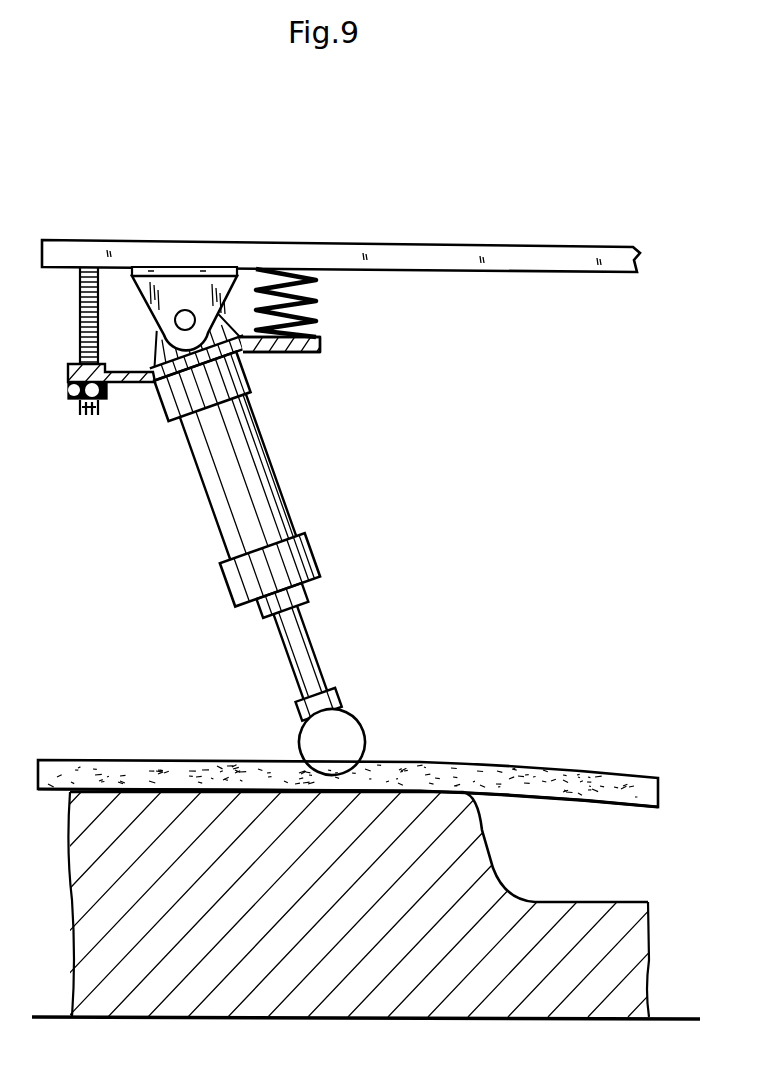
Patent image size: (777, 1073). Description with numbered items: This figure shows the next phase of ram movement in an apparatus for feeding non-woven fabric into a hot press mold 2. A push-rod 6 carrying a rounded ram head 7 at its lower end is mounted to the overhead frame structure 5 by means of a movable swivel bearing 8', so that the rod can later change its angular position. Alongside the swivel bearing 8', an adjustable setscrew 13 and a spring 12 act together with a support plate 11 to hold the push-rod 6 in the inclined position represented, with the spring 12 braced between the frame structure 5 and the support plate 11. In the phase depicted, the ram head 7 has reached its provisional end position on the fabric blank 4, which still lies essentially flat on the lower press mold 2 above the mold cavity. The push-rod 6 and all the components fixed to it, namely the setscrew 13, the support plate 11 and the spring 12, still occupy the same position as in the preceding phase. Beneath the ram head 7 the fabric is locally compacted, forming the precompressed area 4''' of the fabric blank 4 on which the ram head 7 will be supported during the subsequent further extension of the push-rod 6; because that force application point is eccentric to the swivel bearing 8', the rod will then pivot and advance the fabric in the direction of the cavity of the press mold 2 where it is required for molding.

The hot press mold 2 is at (558, 923).
The fabric blank 4 is at (348, 763).
The precompressed area 4''' is at (363, 746).
The frame structure 5 is at (455, 253).
The push-rod 6 is at (258, 459).
The ram head 7 is at (350, 731).
The swivel bearing 8' is at (184, 273).
The support plate 11 is at (282, 346).
The spring 12 is at (288, 283).
The setscrew 13 is at (81, 321).